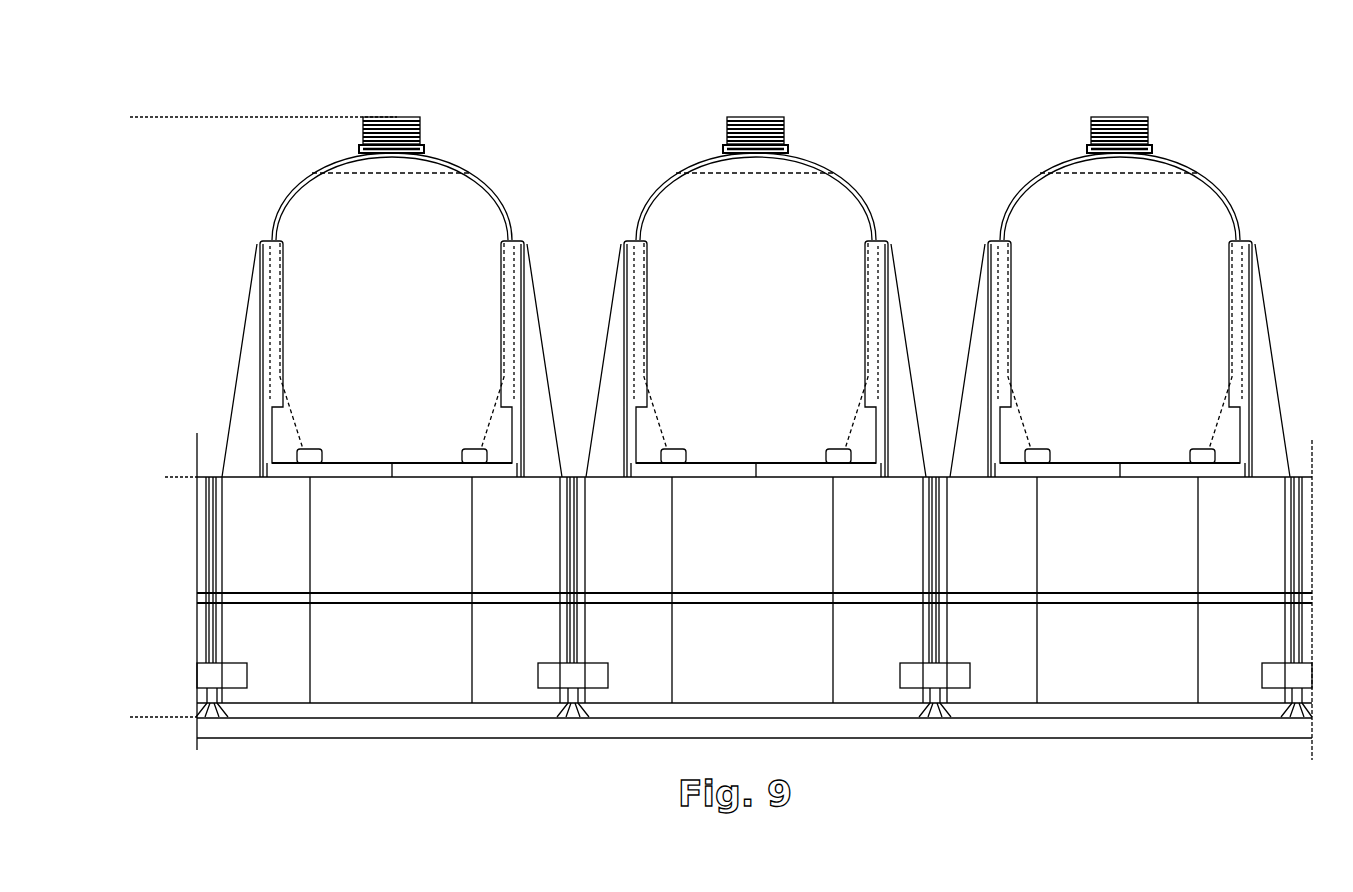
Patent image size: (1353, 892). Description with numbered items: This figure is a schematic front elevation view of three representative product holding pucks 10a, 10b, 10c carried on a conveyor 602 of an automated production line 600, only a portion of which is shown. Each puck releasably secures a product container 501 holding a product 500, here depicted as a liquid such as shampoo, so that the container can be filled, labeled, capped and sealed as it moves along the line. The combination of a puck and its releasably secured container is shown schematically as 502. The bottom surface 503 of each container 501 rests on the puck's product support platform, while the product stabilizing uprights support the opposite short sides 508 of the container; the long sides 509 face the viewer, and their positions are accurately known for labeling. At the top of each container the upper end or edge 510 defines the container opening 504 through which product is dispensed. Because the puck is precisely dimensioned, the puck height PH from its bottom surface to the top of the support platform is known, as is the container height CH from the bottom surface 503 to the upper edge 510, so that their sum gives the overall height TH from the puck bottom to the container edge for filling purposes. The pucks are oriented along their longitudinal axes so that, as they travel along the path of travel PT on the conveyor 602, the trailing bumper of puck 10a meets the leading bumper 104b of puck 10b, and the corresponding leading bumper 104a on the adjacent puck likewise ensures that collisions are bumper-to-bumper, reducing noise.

The product 500 is at (418, 204).
The product container 501 is at (507, 199).
The puck and product combination 502 is at (1250, 229).
The bottom surface of the container 503 is at (310, 457).
The container opening 504 is at (399, 113).
The short sides of the container 508 is at (637, 243).
The long sides of the container 509 is at (411, 351).
The upper end or edge of the container 510 is at (413, 121).
The puck 10a is at (1082, 650).
The puck 10b is at (700, 664).
The puck 10c is at (375, 668).
The first or leading bumper 104a is at (980, 752).
The first or leading bumper of puck 10b 104b is at (980, 752).
The automated production line 600 is at (453, 757).
The conveyor 602 is at (505, 728).
The overall height TH is at (147, 716).
The container height CH is at (176, 118).
The puck height PH is at (176, 478).
The path of travel PT is at (1238, 797).